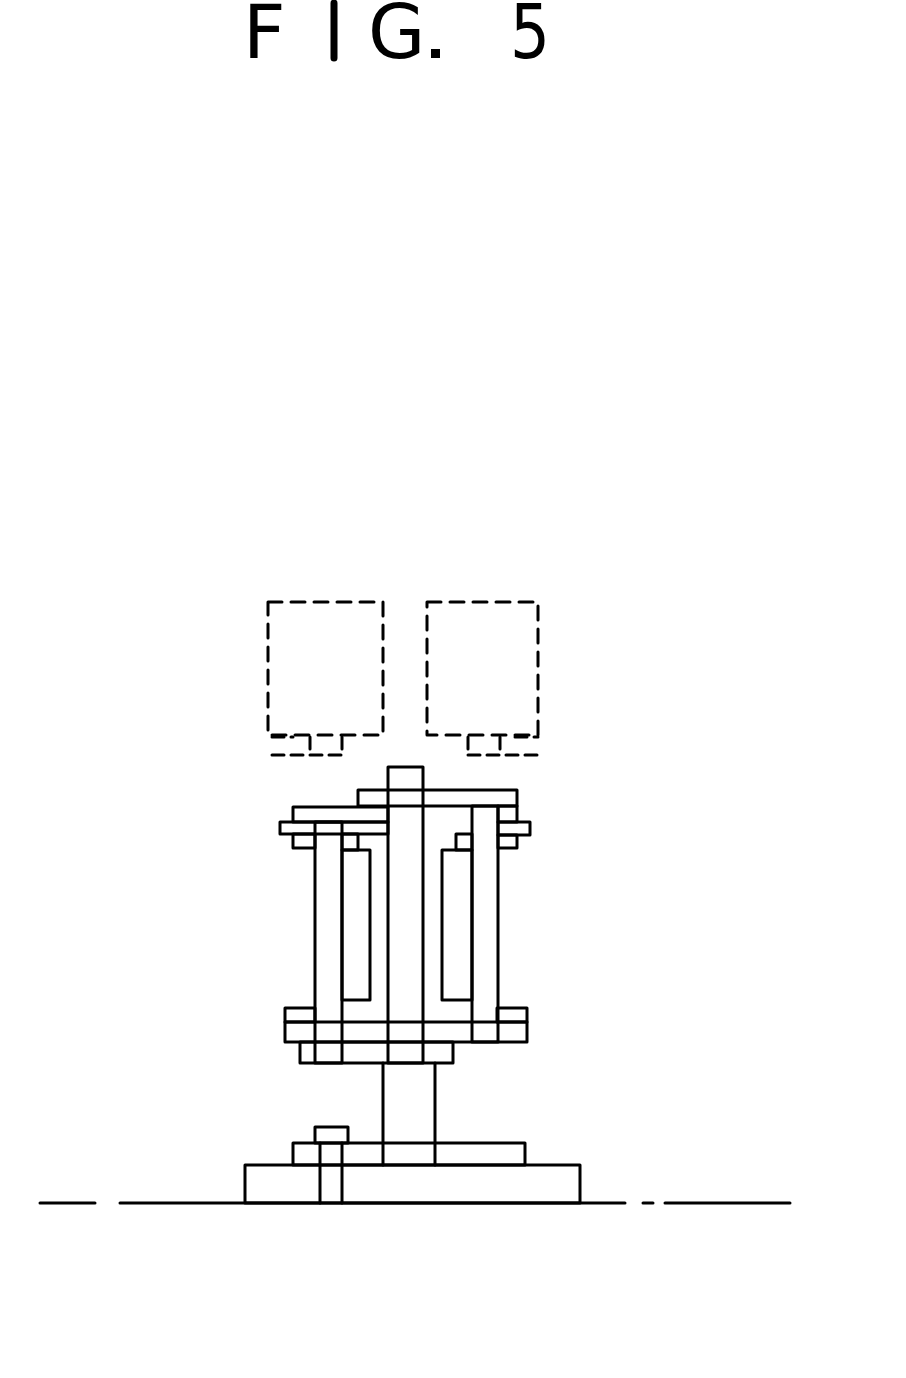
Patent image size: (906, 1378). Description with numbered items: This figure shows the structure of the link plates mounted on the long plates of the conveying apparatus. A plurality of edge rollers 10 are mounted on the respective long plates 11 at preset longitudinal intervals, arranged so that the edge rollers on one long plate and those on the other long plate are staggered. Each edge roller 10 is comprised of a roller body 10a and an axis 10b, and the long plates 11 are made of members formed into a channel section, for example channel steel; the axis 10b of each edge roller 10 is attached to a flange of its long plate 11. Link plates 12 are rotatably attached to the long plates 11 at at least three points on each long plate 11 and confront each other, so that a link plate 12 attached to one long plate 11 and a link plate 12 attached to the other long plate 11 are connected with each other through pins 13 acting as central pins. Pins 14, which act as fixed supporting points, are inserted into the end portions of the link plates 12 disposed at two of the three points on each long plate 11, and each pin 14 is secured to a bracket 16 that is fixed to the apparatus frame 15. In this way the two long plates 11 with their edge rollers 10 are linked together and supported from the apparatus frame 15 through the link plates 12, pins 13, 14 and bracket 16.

The edge roller 10 is at (305, 590).
The roller body 10a is at (290, 648).
The axis 10b is at (257, 750).
The long plate 11 is at (283, 832).
The link plate 12 is at (293, 810).
The pin 13 is at (317, 915).
The pin 14 is at (410, 940).
The apparatus frame 15 is at (707, 1203).
The bracket 16 is at (422, 1128).